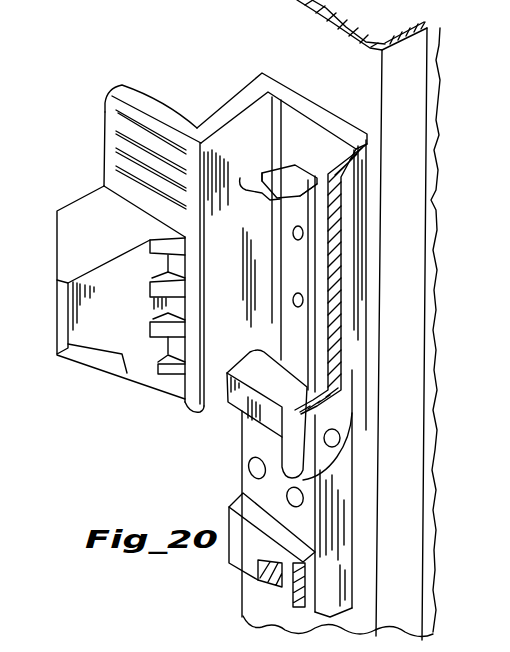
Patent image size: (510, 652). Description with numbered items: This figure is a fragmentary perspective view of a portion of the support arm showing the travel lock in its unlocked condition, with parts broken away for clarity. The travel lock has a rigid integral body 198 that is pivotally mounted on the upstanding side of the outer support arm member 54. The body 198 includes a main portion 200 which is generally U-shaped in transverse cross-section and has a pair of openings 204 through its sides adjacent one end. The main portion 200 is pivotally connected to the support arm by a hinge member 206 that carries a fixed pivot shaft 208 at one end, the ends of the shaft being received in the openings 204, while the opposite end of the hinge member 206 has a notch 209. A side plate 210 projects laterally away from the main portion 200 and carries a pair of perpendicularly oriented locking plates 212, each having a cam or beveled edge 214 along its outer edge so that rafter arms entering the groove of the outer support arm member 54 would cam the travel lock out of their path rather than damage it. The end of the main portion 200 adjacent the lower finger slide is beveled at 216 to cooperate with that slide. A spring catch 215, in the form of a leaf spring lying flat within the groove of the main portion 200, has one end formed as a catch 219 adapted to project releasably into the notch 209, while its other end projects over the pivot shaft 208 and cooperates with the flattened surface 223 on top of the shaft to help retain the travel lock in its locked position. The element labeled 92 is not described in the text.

The outer support arm member 54 is at (397, 594).
The post side wall 92 is at (355, 265).
The rigid integral body 198 is at (363, 183).
The main portion 200 is at (320, 143).
The openings 204 is at (338, 436).
The hinge member 206 is at (312, 514).
The fixed pivot shaft 208 is at (341, 442).
The notch 209 is at (288, 590).
The side plate 210 is at (157, 123).
The locking plates 212 is at (80, 215).
The beveled edge 214 is at (97, 361).
The spring catch 215 is at (264, 113).
The beveled end 216 is at (291, 152).
The catch 219 is at (240, 178).
The flattened surface 223 is at (236, 402).